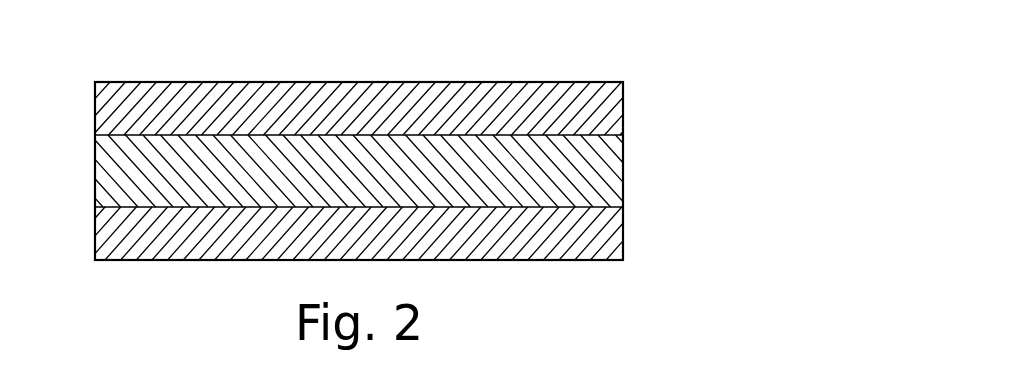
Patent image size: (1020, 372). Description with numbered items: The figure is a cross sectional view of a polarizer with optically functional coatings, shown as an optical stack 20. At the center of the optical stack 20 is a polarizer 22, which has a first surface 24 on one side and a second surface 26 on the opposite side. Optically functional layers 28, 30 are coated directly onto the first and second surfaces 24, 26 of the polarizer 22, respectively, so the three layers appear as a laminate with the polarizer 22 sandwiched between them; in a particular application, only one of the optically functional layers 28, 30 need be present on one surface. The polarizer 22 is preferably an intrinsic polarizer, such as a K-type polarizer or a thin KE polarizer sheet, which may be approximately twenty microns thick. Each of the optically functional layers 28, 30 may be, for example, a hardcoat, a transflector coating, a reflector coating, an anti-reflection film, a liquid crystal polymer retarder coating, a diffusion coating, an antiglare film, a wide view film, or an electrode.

The optical stack 20 is at (424, 53).
The polarizer 22 is at (623, 175).
The first surface 24 is at (598, 132).
The second surface 26 is at (605, 206).
The optically functional layer 28 is at (95, 117).
The optically functional layer 30 is at (95, 236).